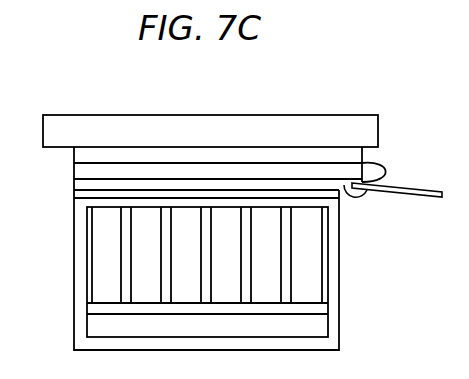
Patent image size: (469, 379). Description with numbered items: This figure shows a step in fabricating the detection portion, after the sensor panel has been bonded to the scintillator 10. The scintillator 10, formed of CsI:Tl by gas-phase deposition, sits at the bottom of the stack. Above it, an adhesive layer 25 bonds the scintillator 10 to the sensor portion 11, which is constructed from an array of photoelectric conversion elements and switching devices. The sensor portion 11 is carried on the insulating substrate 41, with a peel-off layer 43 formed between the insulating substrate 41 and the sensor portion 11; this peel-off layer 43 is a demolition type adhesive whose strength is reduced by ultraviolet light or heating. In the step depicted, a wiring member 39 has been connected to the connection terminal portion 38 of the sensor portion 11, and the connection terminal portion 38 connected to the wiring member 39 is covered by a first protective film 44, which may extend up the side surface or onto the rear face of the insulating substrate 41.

The insulating substrate 41 is at (316, 125).
The peel-off layer 43 is at (80, 160).
The adhesive layer 25 is at (80, 188).
The first protective film 44 is at (384, 177).
The sensor portion 11 is at (366, 172).
The wiring member 39 is at (432, 199).
The connection terminal portion 38 is at (342, 188).
The scintillator 10 is at (325, 279).